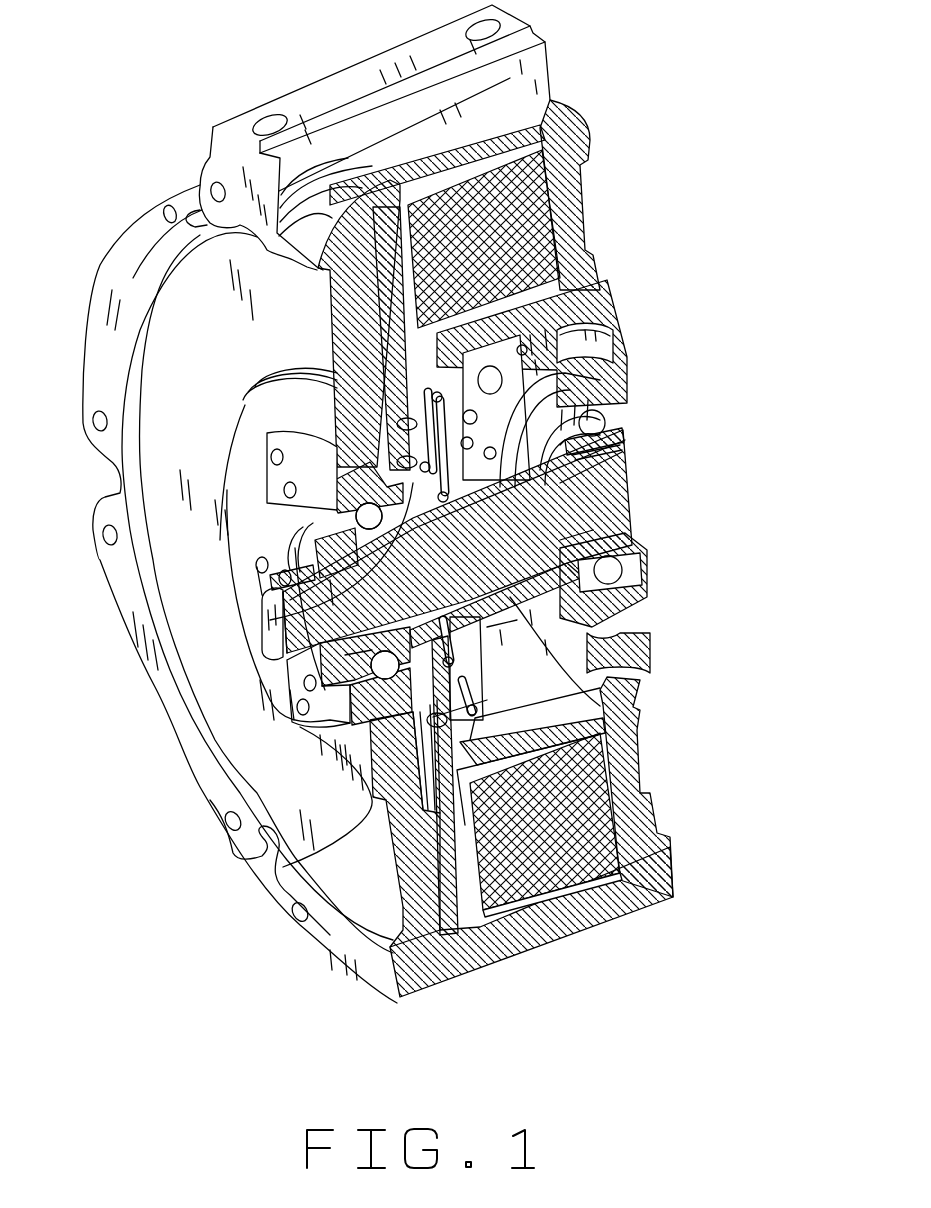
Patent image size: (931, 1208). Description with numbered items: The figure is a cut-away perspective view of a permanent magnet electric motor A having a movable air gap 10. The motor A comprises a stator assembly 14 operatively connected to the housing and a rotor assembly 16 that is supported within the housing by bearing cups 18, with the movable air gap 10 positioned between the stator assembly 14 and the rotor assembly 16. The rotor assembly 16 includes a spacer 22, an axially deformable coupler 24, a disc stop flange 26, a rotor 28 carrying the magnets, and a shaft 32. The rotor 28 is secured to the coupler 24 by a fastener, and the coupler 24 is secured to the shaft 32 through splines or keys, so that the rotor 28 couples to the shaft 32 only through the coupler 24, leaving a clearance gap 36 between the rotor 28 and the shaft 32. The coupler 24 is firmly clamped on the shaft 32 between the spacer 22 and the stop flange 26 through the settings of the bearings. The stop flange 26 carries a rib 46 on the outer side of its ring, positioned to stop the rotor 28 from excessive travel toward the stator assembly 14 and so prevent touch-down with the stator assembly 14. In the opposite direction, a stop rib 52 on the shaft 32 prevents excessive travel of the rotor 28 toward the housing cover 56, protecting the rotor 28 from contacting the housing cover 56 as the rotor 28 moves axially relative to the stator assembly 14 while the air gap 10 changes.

The movable air gap 10 is at (399, 205).
The electric motor A is at (628, 85).
The stator assembly 14 is at (596, 218).
The axially deformable coupler 24 is at (560, 335).
The spacer 22 is at (623, 435).
The disc stop flange 26 is at (565, 480).
The rotor assembly 16 is at (627, 502).
The shaft 32 is at (593, 530).
The bearing cups 18 is at (640, 603).
The rib 46 is at (350, 447).
The stop rib 52 is at (380, 602).
The clearance gap 36 is at (283, 867).
The housing cover 56 is at (403, 1005).
The rotor 28 is at (455, 932).